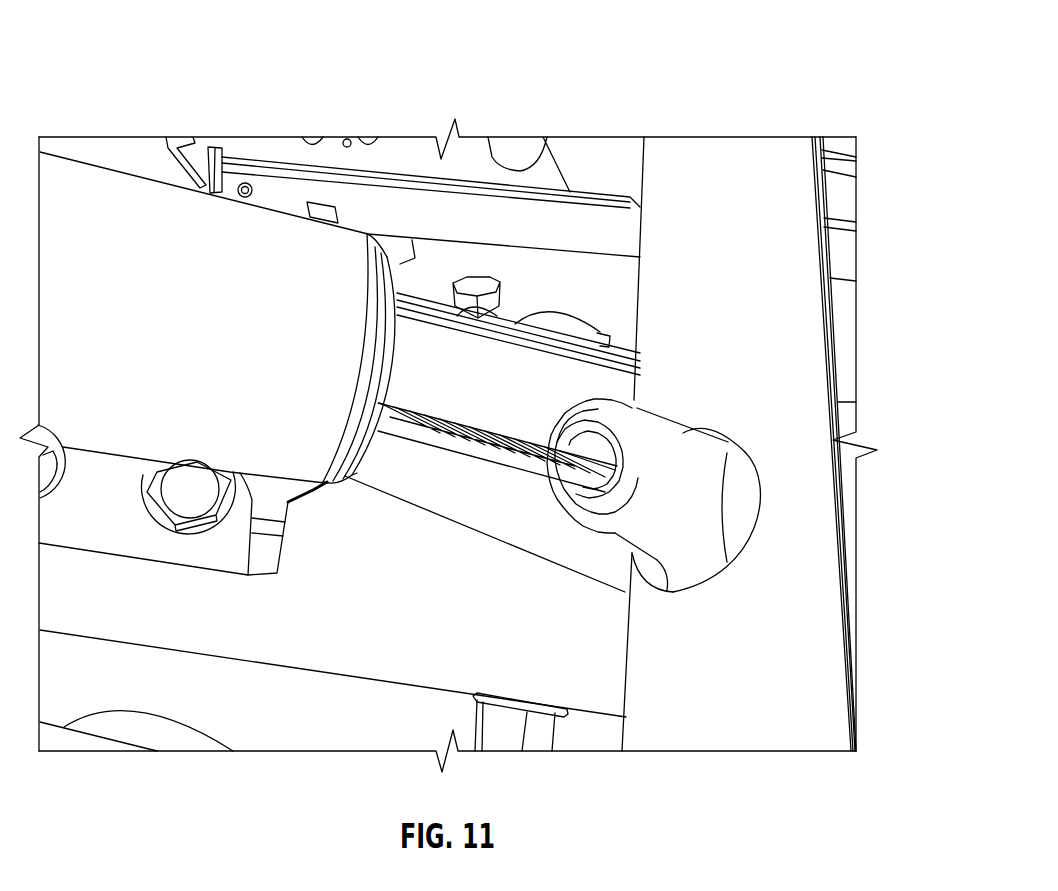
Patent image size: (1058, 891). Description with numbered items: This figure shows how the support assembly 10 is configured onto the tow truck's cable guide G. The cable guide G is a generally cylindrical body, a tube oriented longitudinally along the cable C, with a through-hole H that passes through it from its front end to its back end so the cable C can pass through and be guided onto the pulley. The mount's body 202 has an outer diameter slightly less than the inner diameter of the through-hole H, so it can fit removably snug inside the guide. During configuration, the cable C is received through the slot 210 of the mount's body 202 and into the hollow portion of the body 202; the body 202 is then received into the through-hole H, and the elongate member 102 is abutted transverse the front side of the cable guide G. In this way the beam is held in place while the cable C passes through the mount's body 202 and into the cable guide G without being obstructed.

The support assembly 10 is at (670, 57).
The elongate member 102 is at (727, 173).
The cable guide G is at (98, 204).
The through-hole H is at (398, 364).
The cable C is at (510, 437).
The slot 210 is at (529, 487).
The mount body 202 is at (693, 497).